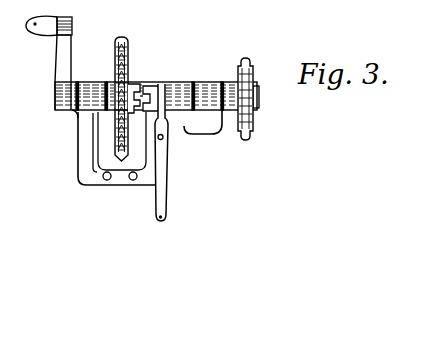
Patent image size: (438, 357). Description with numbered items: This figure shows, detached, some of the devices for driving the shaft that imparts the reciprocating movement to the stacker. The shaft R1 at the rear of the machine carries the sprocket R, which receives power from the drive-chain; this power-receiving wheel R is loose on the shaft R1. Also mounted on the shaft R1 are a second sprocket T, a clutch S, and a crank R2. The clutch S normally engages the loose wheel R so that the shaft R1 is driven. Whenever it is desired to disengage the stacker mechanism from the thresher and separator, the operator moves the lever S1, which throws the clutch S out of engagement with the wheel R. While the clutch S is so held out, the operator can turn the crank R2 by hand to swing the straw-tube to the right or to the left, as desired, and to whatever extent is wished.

The crank R2 is at (57, 51).
The sprocket R is at (131, 62).
The clutch S is at (167, 85).
The shaft R1 is at (197, 84).
The sprocket T is at (253, 65).
The lever S1 is at (167, 177).